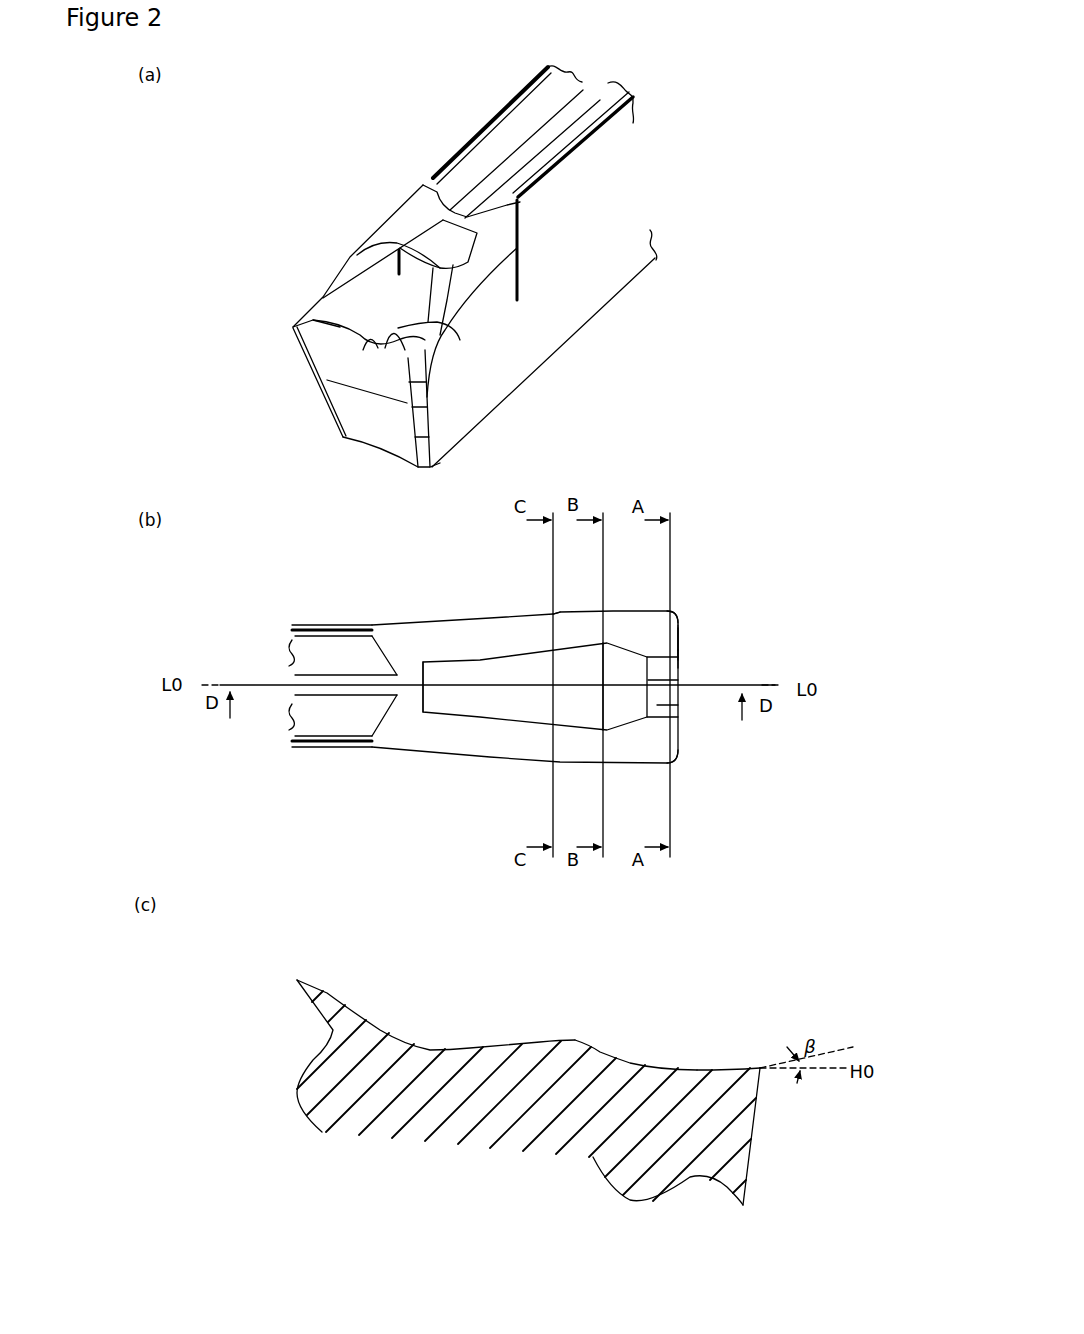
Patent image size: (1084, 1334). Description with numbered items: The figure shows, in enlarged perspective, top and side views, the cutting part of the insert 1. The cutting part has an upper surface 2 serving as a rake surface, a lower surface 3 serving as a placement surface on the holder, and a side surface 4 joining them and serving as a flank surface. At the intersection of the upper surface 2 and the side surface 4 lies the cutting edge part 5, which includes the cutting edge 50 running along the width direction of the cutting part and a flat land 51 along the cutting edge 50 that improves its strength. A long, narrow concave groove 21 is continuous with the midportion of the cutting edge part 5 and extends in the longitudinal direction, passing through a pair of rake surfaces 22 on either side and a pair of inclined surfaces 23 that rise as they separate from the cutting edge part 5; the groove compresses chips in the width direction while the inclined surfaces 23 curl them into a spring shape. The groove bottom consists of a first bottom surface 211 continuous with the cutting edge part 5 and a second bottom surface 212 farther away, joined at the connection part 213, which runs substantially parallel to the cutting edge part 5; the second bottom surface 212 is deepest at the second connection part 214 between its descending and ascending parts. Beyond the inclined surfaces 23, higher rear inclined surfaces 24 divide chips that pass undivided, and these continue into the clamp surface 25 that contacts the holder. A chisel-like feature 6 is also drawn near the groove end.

The insert 1 is at (437, 130).
The upper surface 2 is at (337, 228).
The lower surface 3 is at (530, 378).
The side surface 4 is at (380, 413).
The cutting edge part 5 is at (775, 599).
The chisel edge 6 is at (327, 370).
The concave groove 21 is at (399, 255).
The rake surface 22 is at (313, 320).
The inclined surface 23 is at (360, 270).
The rear inclined surface 24 is at (487, 243).
The clamp surface 25 is at (537, 150).
The cutting edge 50 is at (293, 343).
The land 51 is at (678, 667).
The first bottom surface 211 is at (410, 373).
The second bottom surface 212 is at (423, 357).
The connection part 213 is at (337, 337).
The second connection part 214 is at (357, 307).